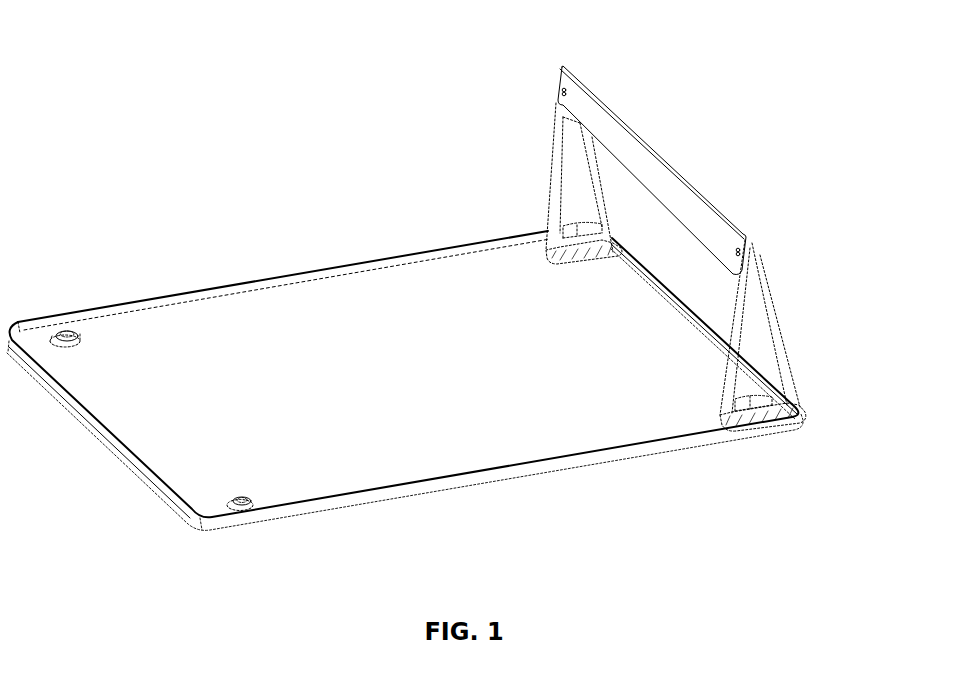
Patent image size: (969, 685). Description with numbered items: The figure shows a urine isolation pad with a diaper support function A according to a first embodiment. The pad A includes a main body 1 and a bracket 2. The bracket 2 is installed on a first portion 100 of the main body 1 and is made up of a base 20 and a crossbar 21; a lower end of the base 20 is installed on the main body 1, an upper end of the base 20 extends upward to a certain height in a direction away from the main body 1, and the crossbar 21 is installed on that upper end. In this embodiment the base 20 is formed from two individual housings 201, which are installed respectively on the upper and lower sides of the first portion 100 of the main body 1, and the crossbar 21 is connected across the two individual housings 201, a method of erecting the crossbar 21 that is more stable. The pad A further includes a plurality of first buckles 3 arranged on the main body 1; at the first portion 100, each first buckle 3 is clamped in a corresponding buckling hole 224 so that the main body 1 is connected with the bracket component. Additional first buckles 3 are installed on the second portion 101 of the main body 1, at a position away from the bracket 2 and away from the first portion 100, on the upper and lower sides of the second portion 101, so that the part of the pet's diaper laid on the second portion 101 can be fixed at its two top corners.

The urine isolation pad with a diaper support function A is at (233, 217).
The main body 1 is at (408, 380).
The first portion 100 is at (696, 365).
The second portion 101 is at (160, 443).
The first buckle 3 is at (247, 510).
The bracket 2 is at (736, 229).
The crossbar 21 is at (618, 130).
The base 20 is at (736, 267).
The individual housing 201 is at (598, 182).
The buckling hole 224 is at (781, 402).